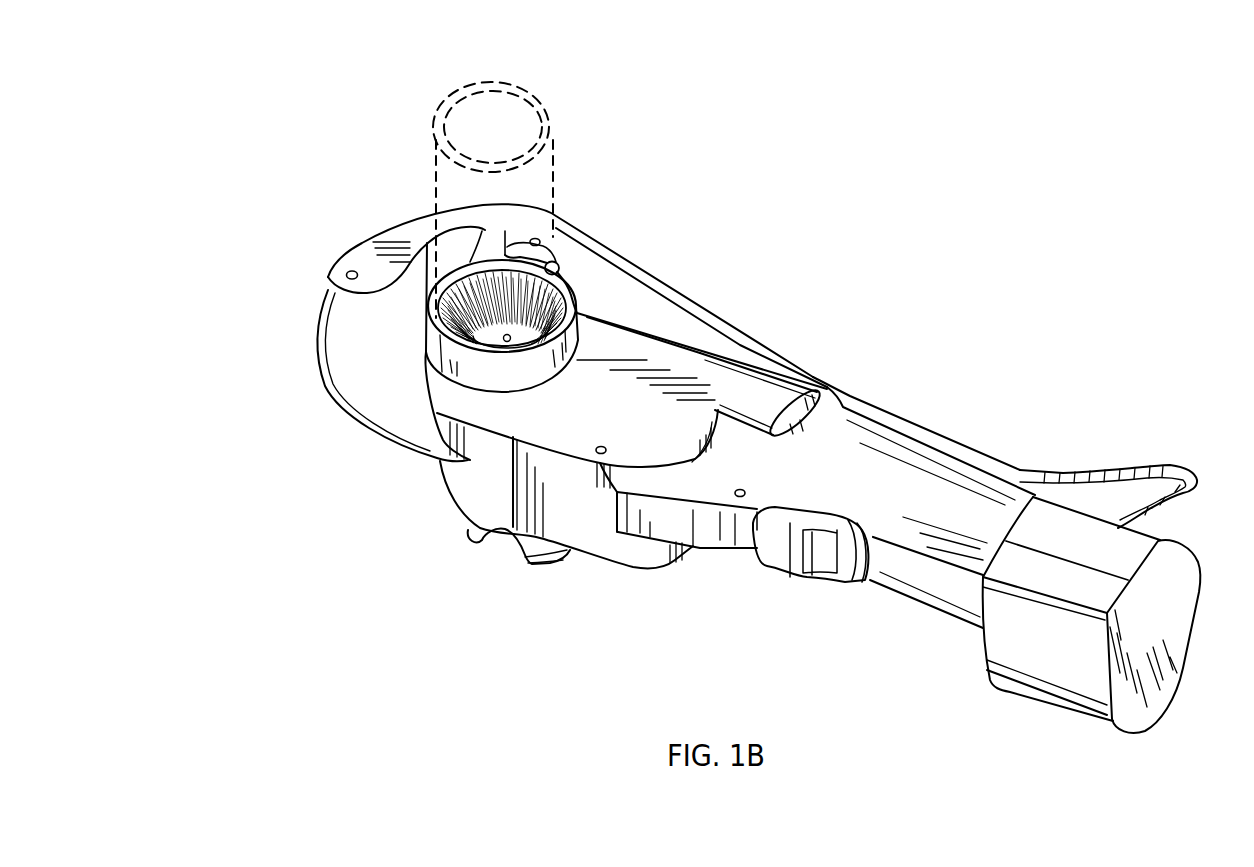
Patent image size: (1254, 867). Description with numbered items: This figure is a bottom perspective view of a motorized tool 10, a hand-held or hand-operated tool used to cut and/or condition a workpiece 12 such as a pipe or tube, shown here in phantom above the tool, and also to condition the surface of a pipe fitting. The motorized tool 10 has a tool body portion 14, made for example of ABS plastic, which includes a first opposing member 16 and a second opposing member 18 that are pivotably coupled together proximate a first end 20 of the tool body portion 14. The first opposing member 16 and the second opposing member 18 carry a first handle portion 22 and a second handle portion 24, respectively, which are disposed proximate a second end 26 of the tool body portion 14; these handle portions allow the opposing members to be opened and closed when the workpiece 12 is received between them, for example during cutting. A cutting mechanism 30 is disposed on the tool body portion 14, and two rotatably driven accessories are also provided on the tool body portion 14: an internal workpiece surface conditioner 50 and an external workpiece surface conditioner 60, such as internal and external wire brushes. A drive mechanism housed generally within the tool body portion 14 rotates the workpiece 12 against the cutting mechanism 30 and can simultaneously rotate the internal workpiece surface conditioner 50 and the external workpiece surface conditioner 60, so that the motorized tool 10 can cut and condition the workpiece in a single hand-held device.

The motorized tool 10 is at (968, 330).
The workpiece 12 is at (555, 178).
The tool body portion 14 is at (665, 589).
The first opposing member 16 is at (620, 284).
The second opposing member 18 is at (653, 363).
The first end 20 is at (259, 387).
The first handle portion 22 is at (950, 443).
The second handle portion 24 is at (923, 590).
The second end 26 is at (1137, 383).
The cutting mechanism 30 is at (550, 262).
The internal workpiece surface conditioner 50 is at (488, 580).
The external workpiece surface conditioner 60 is at (472, 281).